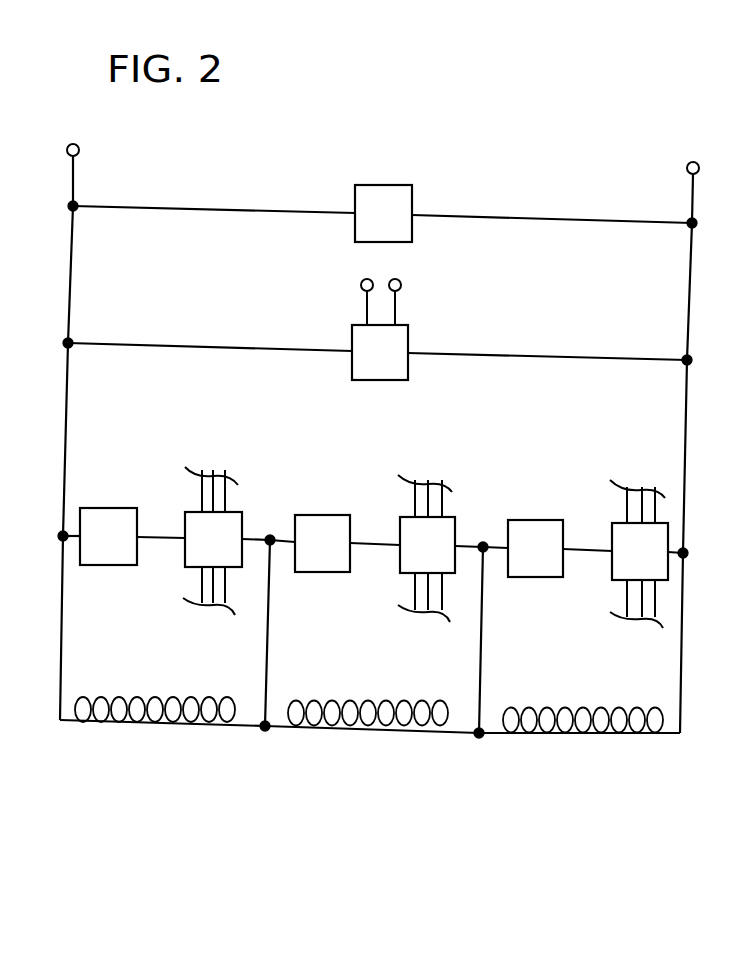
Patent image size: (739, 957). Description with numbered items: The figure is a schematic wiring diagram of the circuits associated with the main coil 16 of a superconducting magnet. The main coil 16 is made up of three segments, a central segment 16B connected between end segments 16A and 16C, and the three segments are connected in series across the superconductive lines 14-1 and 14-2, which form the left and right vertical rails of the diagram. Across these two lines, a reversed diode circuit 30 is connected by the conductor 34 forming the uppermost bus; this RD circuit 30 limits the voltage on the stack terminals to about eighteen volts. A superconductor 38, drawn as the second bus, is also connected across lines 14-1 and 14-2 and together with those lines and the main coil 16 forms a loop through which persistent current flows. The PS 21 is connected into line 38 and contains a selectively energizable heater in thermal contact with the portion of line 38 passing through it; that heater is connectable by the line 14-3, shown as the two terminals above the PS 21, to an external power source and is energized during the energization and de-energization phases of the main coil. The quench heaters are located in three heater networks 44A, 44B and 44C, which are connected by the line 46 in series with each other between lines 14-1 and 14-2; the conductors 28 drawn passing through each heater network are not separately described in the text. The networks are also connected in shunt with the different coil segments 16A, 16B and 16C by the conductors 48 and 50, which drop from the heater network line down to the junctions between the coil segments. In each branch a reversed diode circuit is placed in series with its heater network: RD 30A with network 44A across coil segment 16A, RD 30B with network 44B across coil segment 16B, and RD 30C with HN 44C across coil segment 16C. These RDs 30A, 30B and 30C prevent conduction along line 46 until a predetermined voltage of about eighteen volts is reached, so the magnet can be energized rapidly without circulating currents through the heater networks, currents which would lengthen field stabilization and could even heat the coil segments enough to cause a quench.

The superconductive line 14-1 is at (71, 404).
The superconductive line 14-2 is at (697, 285).
The line 14-3 is at (395, 310).
The main coil 16 is at (350, 803).
The end segment 16A is at (130, 722).
The central segment 16B is at (575, 735).
The end segment 16C is at (360, 728).
The PS 21 is at (352, 332).
The heater wires 28 is at (213, 470).
The reversed diode circuit 30 is at (390, 196).
The reversed diode circuit 30A is at (112, 521).
The reversed diode circuit 30B is at (533, 530).
The reversed diode circuit 30C is at (325, 525).
The conductor 34 is at (546, 221).
The superconductor 38 is at (587, 361).
The heater network 44A is at (232, 525).
The heater network 44B is at (620, 563).
The heater network 44C is at (440, 533).
The line 46 is at (158, 540).
The conductor 48 is at (267, 632).
The conductor 50 is at (483, 637).